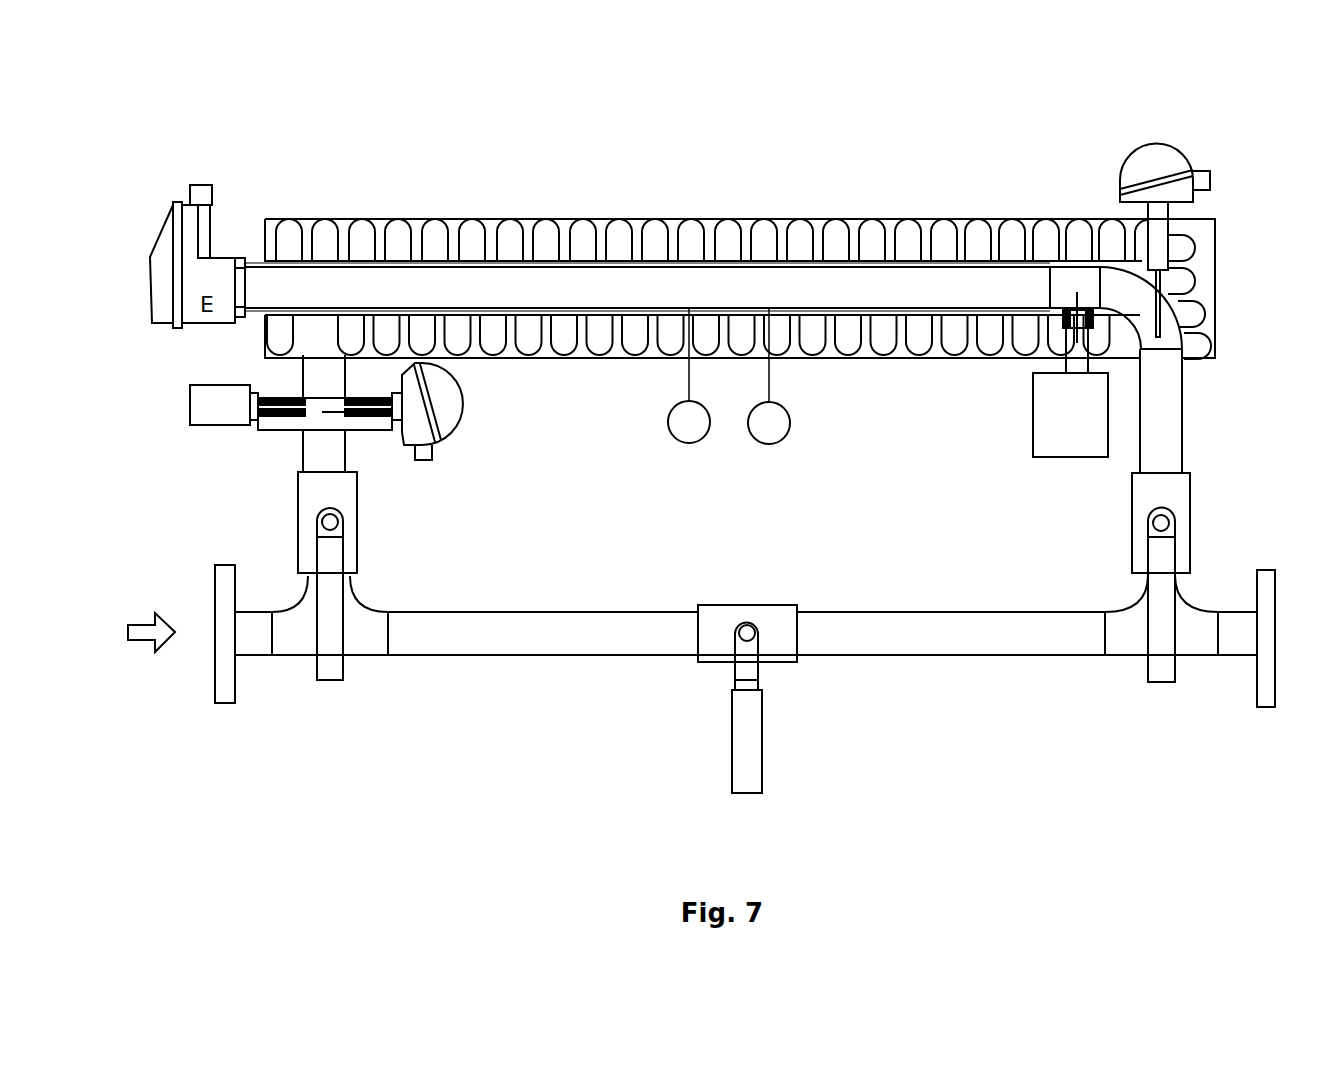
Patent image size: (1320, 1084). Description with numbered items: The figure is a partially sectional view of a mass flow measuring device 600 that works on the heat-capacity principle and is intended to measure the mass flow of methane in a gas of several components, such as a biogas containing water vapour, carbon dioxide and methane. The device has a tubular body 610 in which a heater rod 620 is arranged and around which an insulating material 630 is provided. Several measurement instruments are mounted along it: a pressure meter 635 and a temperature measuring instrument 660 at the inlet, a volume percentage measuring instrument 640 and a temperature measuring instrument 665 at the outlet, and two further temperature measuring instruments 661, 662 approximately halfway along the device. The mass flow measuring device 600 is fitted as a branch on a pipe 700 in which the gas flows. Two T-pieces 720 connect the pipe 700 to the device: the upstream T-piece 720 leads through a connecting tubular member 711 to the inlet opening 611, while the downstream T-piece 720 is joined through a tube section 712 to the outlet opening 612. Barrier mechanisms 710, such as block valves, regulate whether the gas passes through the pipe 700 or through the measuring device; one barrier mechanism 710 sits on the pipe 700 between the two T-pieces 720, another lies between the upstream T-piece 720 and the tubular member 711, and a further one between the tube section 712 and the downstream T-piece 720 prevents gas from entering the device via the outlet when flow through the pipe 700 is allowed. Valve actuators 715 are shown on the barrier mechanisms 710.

The mass flow measuring device 600 is at (1218, 303).
The tubular body 610 is at (955, 258).
The heater rod 620 is at (410, 267).
The insulating material 630 is at (708, 225).
The temperature measuring instrument 665 is at (1160, 155).
The inlet opening 611 is at (313, 397).
The outlet opening 612 is at (1158, 343).
The connecting tubular member 711 is at (328, 368).
The tube section 712 is at (1167, 428).
The pressure meter 635 is at (206, 431).
The volume percentage measuring instrument 640 is at (1063, 440).
The temperature measuring instrument 660 is at (452, 430).
The temperature measuring instrument 661 is at (695, 443).
The temperature measuring instrument 662 is at (778, 440).
The pipe 700 is at (556, 640).
The barrier mechanism 710 is at (345, 503).
The valve actuator 715 is at (328, 618).
The T-piece 720 is at (365, 643).